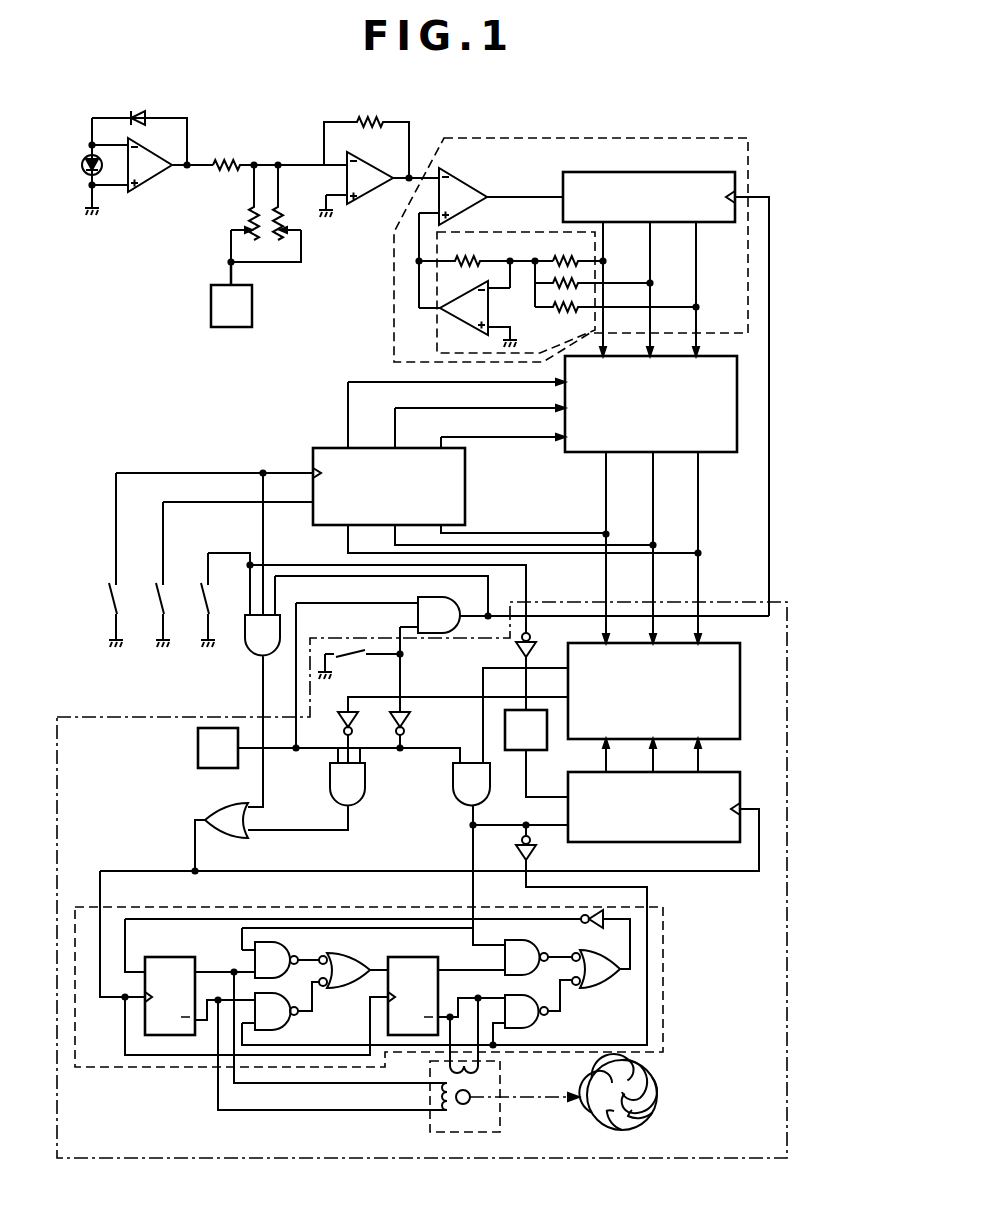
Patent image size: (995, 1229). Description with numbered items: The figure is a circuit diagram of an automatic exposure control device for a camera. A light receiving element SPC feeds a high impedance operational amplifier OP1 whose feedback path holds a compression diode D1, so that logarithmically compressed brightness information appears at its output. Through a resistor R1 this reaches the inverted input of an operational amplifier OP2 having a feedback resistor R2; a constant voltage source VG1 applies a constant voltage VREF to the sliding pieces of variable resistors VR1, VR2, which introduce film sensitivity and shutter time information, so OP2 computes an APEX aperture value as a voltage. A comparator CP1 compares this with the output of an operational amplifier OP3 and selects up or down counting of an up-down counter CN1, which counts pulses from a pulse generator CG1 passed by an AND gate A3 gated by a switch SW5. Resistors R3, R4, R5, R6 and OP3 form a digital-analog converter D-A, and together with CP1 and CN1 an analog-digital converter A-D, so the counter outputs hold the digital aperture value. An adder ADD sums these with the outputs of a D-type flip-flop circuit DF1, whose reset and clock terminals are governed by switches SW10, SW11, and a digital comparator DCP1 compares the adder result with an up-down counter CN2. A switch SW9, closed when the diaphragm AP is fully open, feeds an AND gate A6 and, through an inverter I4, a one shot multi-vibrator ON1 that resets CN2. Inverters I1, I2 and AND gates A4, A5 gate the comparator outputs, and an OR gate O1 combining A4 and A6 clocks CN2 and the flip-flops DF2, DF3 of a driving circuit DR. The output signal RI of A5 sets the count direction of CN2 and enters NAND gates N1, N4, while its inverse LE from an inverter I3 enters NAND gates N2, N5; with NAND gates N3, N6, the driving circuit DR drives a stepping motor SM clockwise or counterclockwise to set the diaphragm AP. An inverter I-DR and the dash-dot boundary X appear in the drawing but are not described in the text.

The light receiving element SPC is at (81, 166).
The compression diode D1 is at (139, 126).
The operational amplifier OP1 is at (152, 165).
The resistor R1 is at (268, 153).
The variable resistor VR1 is at (240, 213).
The variable resistor VR2 is at (276, 213).
The constant voltage VREF is at (274, 276).
The constant voltage source VG1 is at (231, 294).
The resistor R2 is at (366, 136).
The operational amplifier OP2 is at (379, 184).
The comparator CP1 is at (491, 238).
The analog-digital converter A-D is at (517, 137).
The digital-analog converter D-A is at (493, 232).
The operational amplifier OP3 is at (468, 314).
The resistor R3 is at (484, 281).
The resistor R4 is at (579, 251).
The resistor R5 is at (577, 277).
The resistor R6 is at (577, 302).
The up-down counter CN1 is at (666, 394).
The adder ADD is at (542, 499).
The D-type flip-flop circuit DF1 is at (407, 467).
The switch SW11 is at (93, 560).
The switch SW10 is at (146, 574).
The switch SW9 is at (212, 600).
The switch SW5 is at (360, 669).
The AND gate A6 is at (262, 640).
The AND gate A3 is at (509, 599).
The inverter I4 is at (536, 671).
The one shot multi-vibrator ON1 is at (536, 753).
The digital comparator DCP1 is at (544, 703).
The inverter I1 is at (358, 737).
The inverter I2 is at (409, 730).
The pulse generator CG1 is at (329, 685).
The AND gate A4 is at (306, 796).
The AND gate A5 is at (510, 854).
The OR gate O1 is at (220, 838).
The inverter I3 is at (429, 927).
The up-down counter CN2 is at (654, 790).
The control circuit block X is at (787, 967).
The driving circuit DR is at (369, 969).
The output signal RI is at (357, 906).
The signal LE is at (511, 893).
The D-type flip-flop circuit DF2 is at (289, 1033).
The NAND gate N1 is at (280, 953).
The NAND gate N2 is at (444, 1013).
The NAND gate N3 is at (353, 970).
The D-type flip-flop circuit DF3 is at (446, 1008).
The NAND gate N4 is at (538, 957).
The NAND gate N5 is at (532, 1012).
The NAND gate N6 is at (601, 953).
The inverter I-DR is at (591, 925).
The stepping motor SM is at (504, 1108).
The diaphragm AP is at (624, 1095).